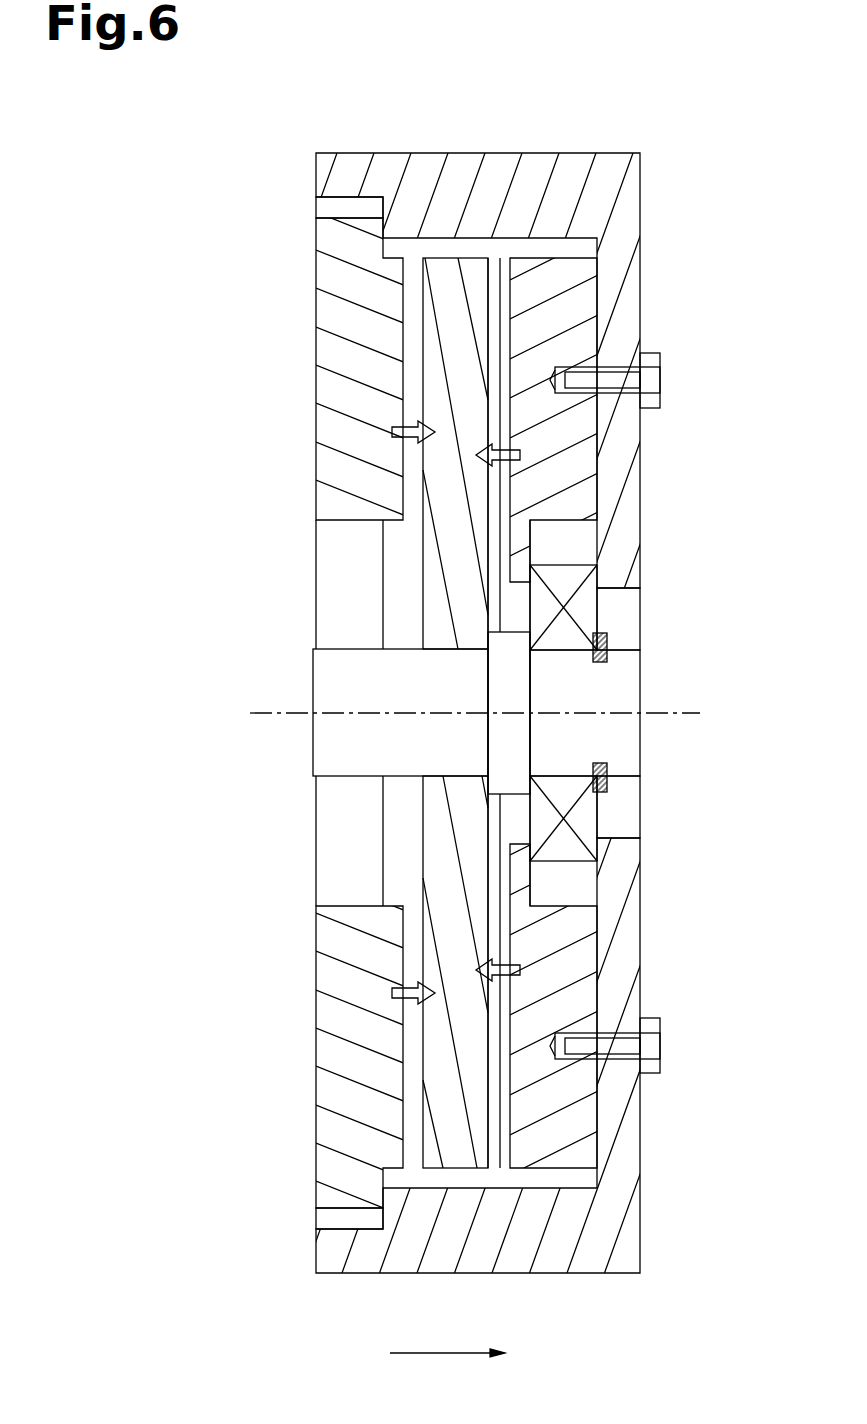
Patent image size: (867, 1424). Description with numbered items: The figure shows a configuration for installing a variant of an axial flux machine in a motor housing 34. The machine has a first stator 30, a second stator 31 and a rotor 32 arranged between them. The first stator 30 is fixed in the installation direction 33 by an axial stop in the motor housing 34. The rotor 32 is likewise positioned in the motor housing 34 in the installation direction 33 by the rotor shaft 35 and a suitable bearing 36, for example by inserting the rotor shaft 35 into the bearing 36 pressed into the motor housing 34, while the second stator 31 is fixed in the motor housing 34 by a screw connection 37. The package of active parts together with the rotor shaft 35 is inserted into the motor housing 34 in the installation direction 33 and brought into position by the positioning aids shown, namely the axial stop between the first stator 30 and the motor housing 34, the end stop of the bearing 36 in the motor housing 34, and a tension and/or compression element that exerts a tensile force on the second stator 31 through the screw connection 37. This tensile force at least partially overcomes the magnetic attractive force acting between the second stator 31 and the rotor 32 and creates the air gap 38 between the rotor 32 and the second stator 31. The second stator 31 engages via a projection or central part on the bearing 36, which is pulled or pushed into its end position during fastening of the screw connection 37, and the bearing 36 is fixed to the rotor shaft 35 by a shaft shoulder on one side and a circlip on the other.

The first stator 30 is at (326, 1168).
The second stator 31 is at (580, 298).
The rotor 32 is at (453, 1142).
The installation direction 33 is at (447, 1350).
The motor housing 34 is at (605, 1238).
The rotor shaft 35 is at (613, 683).
The bearing 36 is at (583, 825).
The screw connection 37 is at (650, 380).
The air gap 38 is at (502, 258).